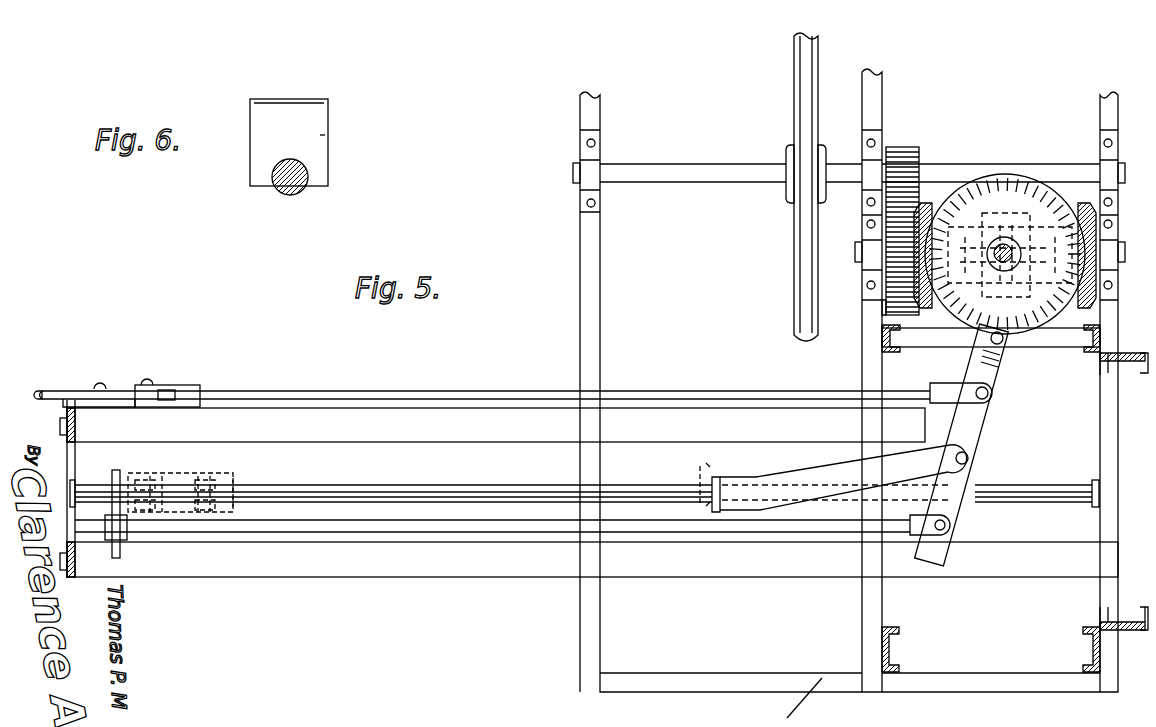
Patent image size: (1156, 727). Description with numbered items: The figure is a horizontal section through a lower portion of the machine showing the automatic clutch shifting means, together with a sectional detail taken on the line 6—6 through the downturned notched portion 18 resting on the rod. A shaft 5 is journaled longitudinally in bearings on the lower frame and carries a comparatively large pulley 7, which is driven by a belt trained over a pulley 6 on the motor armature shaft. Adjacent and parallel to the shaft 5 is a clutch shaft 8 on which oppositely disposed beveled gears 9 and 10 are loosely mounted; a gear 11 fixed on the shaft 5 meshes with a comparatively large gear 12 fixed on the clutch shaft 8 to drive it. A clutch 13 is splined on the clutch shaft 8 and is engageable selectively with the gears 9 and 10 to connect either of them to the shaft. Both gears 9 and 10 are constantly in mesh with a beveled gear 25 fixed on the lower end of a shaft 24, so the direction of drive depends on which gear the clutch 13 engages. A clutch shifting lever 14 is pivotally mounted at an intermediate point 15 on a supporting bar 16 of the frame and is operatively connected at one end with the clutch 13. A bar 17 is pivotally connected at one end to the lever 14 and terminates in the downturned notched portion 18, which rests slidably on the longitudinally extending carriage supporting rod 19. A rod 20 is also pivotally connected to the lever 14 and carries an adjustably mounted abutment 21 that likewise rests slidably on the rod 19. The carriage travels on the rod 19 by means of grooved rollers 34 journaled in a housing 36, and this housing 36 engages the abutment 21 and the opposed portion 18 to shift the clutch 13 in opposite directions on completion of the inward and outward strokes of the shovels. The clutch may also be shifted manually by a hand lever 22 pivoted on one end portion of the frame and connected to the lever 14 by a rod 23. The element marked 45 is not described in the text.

In FIG. 5, the shaft 5 is at (662, 176).
In FIG. 5, the pulley 6 is at (701, 486).
In FIG. 5, the pulley 7 is at (800, 275).
In FIG. 5, the clutch shaft 8 is at (1096, 252).
In FIG. 5, the beveled gear 9 is at (926, 212).
In FIG. 5, the beveled gear 10 is at (1080, 185).
In FIG. 5, the gear 11 is at (901, 157).
In FIG. 5, the gear 12 is at (900, 298).
In FIG. 5, the clutch 13 is at (996, 232).
In FIG. 5, the clutch shifting lever 14 is at (978, 432).
In FIG. 5, the pivot 15 is at (1008, 340).
In FIG. 5, the supporting bar 16 is at (1072, 347).
In FIG. 6, the bar 17 is at (279, 100).
In FIG. 5, the bar 17 is at (818, 470).
In FIG. 6, the downturned notched portion 18 is at (325, 135).
In FIG. 6, the carriage supporting rod 19 is at (292, 196).
In FIG. 5, the carriage supporting rod 19 is at (406, 489).
In FIG. 5, the rod 20 is at (470, 536).
In FIG. 5, the abutment 21 is at (120, 550).
In FIG. 5, the hand lever 22 is at (46, 389).
In FIG. 5, the rod 23 is at (386, 396).
In FIG. 5, the shaft 24 is at (962, 322).
In FIG. 5, the beveled gear 25 is at (1016, 200).
In FIG. 5, the grooved rollers 34 is at (202, 478).
In FIG. 5, the housing 36 is at (236, 478).
In FIG. 5, the bracket 45 is at (1144, 365).